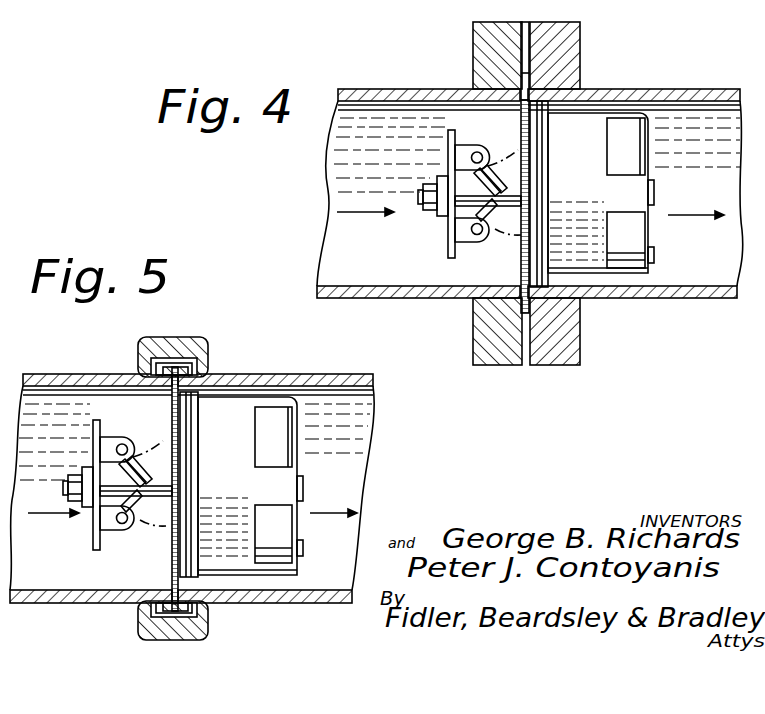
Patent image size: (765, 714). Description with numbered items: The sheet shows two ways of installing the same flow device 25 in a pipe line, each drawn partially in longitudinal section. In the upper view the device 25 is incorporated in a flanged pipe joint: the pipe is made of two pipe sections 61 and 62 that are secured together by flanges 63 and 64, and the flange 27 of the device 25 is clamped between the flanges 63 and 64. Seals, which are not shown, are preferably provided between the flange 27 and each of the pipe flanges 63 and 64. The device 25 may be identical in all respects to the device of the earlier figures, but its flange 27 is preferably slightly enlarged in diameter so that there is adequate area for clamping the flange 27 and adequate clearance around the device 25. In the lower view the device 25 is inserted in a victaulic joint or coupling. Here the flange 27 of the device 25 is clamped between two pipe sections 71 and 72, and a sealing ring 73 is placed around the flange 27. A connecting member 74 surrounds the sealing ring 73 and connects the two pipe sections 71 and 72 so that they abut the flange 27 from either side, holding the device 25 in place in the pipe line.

In FIG. 4, the device 25 is at (595, 203).
In FIG. 5, the device 25 is at (245, 495).
In FIG. 4, the flange 27 is at (529, 309).
In FIG. 5, the flange 27 is at (183, 396).
In FIG. 4, the pipe section 61 is at (423, 89).
In FIG. 4, the pipe section 62 is at (667, 88).
In FIG. 4, the flange 63 is at (484, 34).
In FIG. 4, the flange 64 is at (578, 37).
In FIG. 5, the pipe section 71 is at (48, 377).
In FIG. 5, the pipe section 72 is at (303, 375).
In FIG. 5, the sealing ring 73 is at (181, 369).
In FIG. 5, the connecting member 74 is at (164, 337).